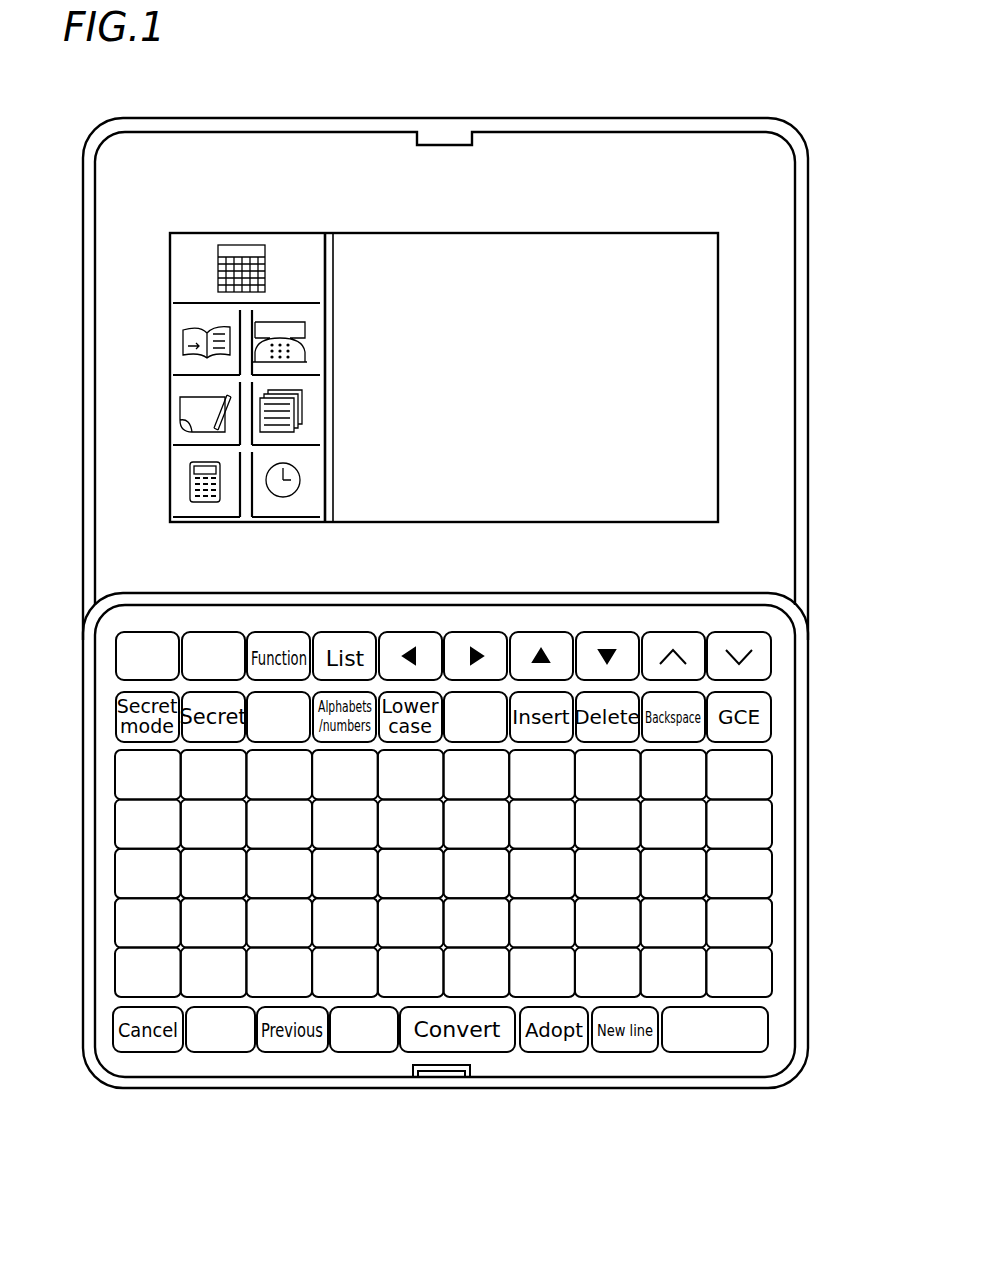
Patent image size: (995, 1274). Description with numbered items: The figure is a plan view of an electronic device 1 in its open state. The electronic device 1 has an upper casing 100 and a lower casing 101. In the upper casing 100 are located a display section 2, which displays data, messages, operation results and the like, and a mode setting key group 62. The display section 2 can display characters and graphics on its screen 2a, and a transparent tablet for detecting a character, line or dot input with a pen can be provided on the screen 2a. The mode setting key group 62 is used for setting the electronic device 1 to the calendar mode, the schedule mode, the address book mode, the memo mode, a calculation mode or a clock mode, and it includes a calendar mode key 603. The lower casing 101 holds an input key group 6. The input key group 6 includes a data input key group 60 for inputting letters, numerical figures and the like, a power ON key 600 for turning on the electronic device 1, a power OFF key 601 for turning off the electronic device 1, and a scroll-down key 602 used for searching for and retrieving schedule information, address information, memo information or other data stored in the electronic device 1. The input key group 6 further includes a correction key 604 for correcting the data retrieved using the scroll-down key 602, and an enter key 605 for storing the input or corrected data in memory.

The upper casing 100 is at (798, 142).
The electronic device 1 is at (798, 617).
The lower casing 101 is at (617, 1088).
The display section 2 is at (718, 317).
The screen 2a is at (604, 257).
The mode setting key group 62 is at (170, 382).
The calendar mode key 603 is at (190, 259).
The power ON key 600 is at (125, 657).
The power OFF key 601 is at (205, 632).
The scroll-down key 602 is at (765, 656).
The input key group 6 is at (488, 872).
The data input key group 60 is at (762, 771).
The correction key 604 is at (486, 741).
The enter key 605 is at (760, 1024).